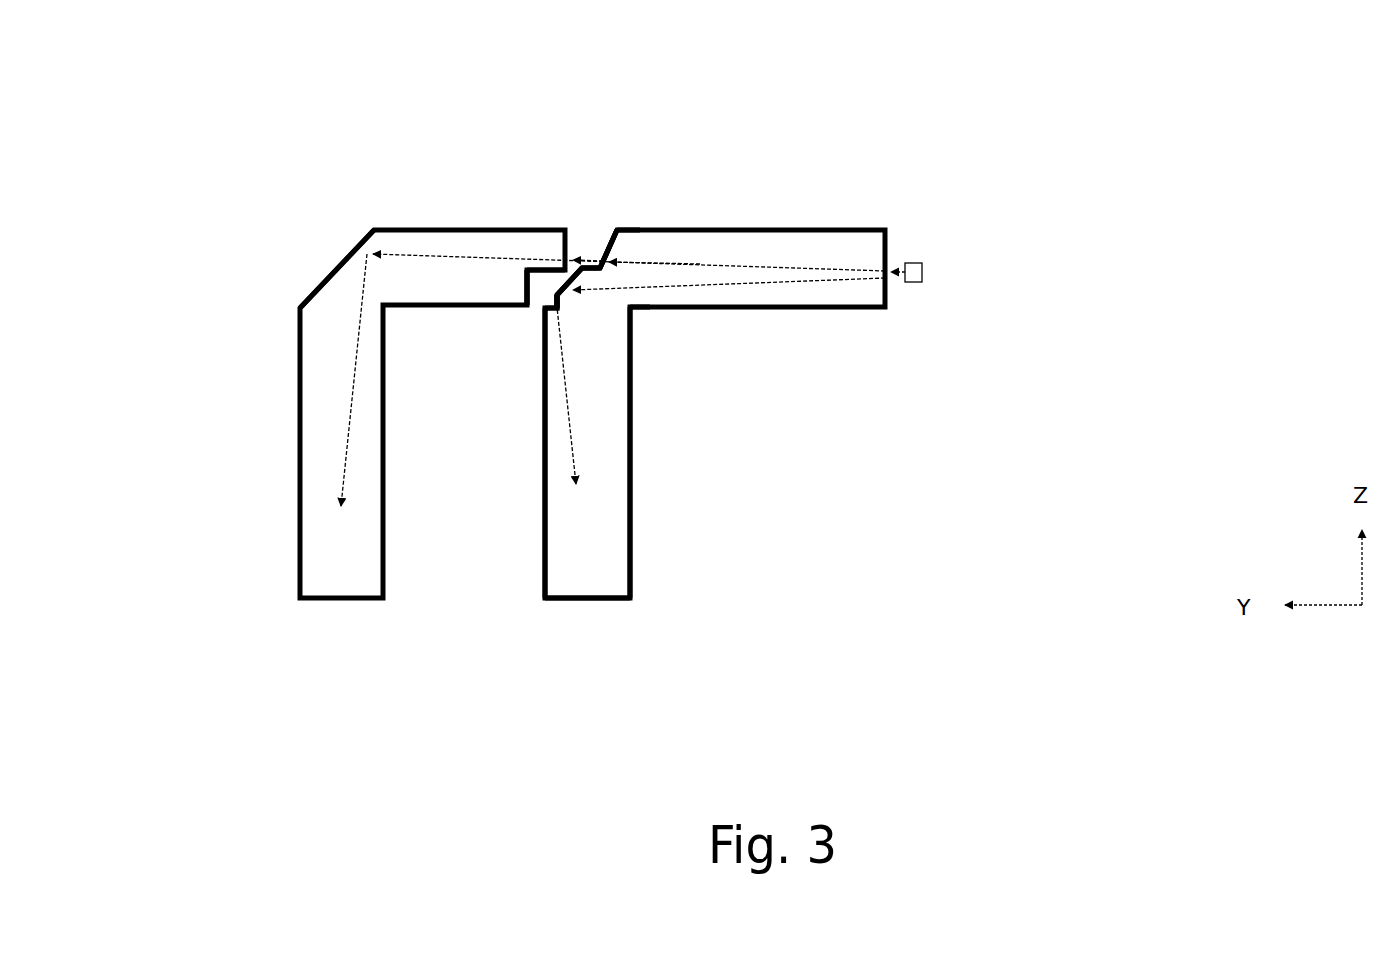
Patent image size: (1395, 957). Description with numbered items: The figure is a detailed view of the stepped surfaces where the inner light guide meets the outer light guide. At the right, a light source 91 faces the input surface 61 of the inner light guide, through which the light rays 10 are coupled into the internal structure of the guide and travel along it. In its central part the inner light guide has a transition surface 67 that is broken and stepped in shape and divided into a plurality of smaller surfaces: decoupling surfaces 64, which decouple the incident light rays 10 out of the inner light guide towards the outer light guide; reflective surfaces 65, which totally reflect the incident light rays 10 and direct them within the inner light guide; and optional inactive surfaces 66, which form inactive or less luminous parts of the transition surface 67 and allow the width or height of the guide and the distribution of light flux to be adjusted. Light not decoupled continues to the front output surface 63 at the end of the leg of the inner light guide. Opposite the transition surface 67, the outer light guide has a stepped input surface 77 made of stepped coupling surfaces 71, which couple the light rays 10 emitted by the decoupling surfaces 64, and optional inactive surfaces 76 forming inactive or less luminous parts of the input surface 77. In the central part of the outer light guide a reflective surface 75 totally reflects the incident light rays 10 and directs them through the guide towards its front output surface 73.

The light rays 10 is at (375, 230).
The input surface 61 is at (887, 297).
The front output surface 63 is at (595, 503).
The decoupling surfaces 64 is at (568, 290).
The reflective surfaces 65 is at (587, 277).
The inactive surfaces 66 is at (555, 312).
The transition surface 67 is at (930, 405).
The coupling surfaces 71 is at (515, 287).
The front output surface 73 is at (327, 515).
The reflective surface 75 is at (325, 278).
The inactive surfaces 76 is at (548, 262).
The input surface 77 is at (483, 97).
The light source 91 is at (922, 272).